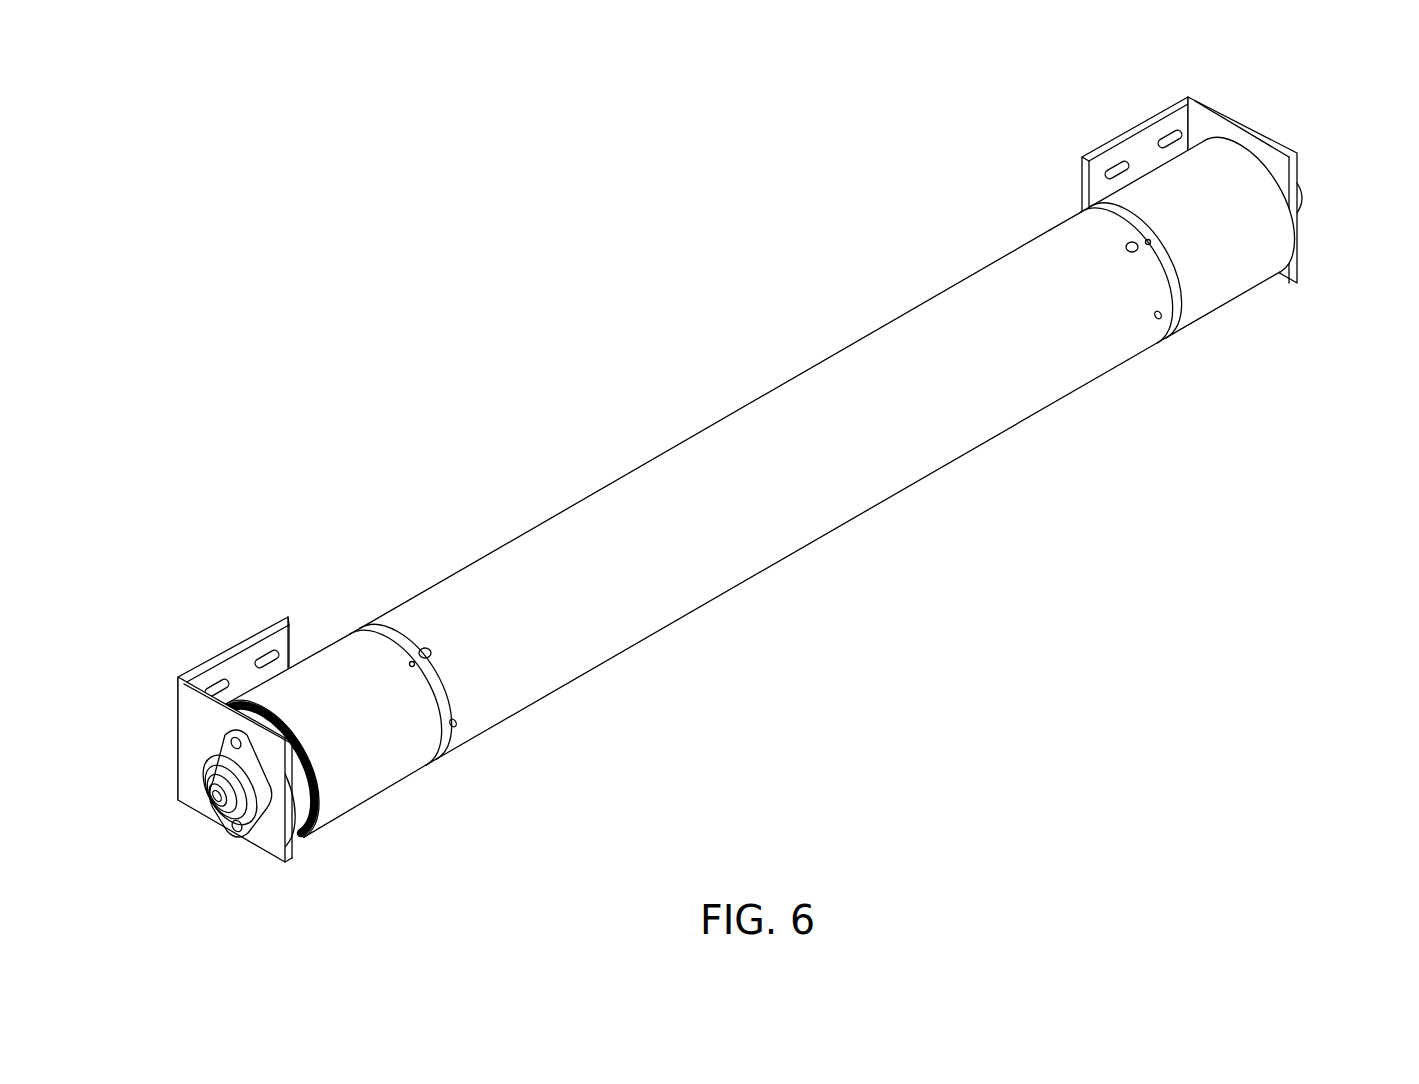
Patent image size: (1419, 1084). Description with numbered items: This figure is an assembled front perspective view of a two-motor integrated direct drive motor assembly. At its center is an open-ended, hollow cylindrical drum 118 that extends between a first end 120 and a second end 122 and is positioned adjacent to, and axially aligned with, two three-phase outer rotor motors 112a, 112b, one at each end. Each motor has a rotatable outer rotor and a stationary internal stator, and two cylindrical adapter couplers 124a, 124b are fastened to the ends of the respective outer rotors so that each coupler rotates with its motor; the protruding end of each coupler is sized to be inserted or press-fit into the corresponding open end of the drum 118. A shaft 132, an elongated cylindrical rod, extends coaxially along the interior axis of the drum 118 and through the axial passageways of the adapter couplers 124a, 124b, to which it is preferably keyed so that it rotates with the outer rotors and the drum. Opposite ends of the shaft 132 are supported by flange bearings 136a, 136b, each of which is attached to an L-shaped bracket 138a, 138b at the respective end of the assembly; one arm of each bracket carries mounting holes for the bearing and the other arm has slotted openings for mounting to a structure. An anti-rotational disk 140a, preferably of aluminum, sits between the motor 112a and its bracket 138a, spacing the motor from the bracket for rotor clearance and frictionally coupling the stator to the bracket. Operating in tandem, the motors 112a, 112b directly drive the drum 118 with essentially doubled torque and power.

The three-phase outer rotor motor 112a is at (383, 745).
The three-phase outer rotor motor 112b is at (1227, 265).
The hollow cylindrical drum 118 is at (672, 480).
The first end 120 is at (457, 687).
The second end 122 is at (1120, 323).
The adapter coupler 124a is at (388, 643).
The adapter coupler 124b is at (1170, 330).
The shaft 132 is at (212, 797).
The flange bearing 136a is at (283, 857).
The flange bearing 136b is at (1305, 200).
The L-shaped bracket 138a is at (237, 672).
The L-shaped bracket 138b is at (1142, 158).
The anti-rotational disk 140a is at (310, 823).